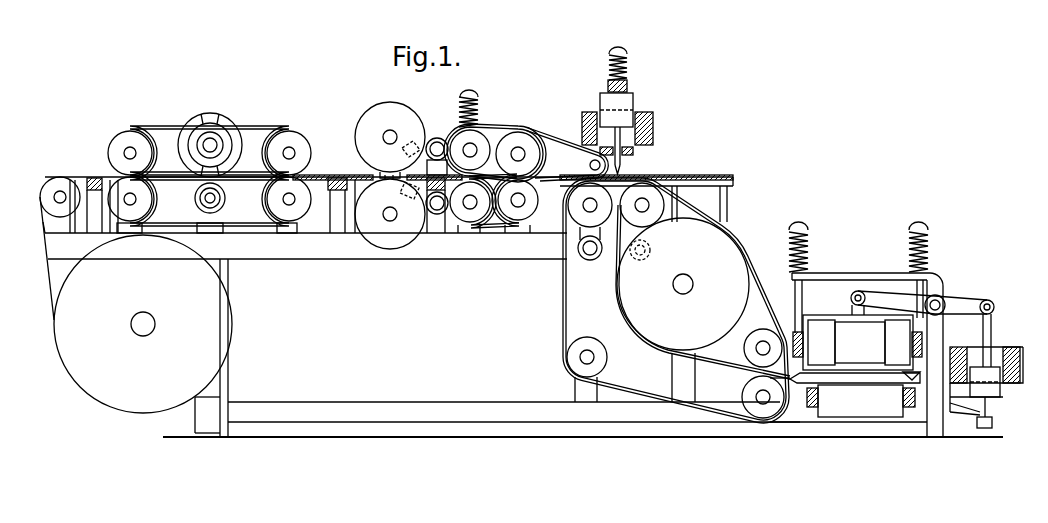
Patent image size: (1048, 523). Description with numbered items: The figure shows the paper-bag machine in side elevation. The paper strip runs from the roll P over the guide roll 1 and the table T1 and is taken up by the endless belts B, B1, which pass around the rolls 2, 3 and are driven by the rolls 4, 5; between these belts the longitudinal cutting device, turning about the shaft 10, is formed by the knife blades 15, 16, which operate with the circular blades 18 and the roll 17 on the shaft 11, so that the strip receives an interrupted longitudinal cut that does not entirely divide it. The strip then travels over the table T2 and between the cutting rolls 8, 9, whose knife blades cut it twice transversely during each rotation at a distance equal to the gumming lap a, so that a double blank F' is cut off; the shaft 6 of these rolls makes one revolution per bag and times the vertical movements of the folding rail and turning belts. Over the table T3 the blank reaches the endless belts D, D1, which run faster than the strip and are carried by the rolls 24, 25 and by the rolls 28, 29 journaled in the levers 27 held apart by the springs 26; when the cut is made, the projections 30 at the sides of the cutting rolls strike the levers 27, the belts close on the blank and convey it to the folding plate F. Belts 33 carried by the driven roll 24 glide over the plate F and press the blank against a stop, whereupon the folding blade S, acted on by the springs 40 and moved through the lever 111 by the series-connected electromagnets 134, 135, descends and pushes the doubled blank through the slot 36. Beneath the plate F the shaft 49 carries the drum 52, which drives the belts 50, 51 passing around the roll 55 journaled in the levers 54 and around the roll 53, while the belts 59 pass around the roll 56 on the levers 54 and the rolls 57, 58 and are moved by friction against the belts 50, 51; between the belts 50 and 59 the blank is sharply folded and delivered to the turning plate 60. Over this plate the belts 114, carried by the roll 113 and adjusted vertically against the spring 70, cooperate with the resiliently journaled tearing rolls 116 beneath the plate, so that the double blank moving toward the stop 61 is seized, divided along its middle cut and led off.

The guide roll 1 is at (52, 180).
The roll P is at (100, 400).
The table T1 is at (92, 178).
The upper belt roller 2 is at (143, 143).
The lower belt roller 3 is at (138, 204).
The roll 4 is at (306, 150).
The roll 5 is at (300, 209).
The endless belt B is at (264, 129).
The endless belt B1 is at (209, 199).
The knife blade 16 is at (210, 118).
The side blade 15 is at (188, 158).
The drum shaft 10 is at (222, 150).
The roll 17 is at (221, 195).
The circular blade 18 is at (199, 193).
The shaft 11 is at (198, 202).
The table T2 is at (333, 172).
The table T3 is at (434, 173).
The cutting roll 8 is at (390, 110).
The shaft 6 is at (386, 216).
The projection 30 is at (402, 150).
The cutting roll 9 is at (408, 240).
The lever 27 is at (437, 137).
The roll 28 is at (478, 136).
The spring 26 is at (472, 100).
The endless belt D is at (505, 126).
The roll 24 is at (524, 136).
The belt 33 is at (554, 140).
The double blank F' is at (560, 161).
The roll 29 is at (473, 200).
The roll 25 is at (512, 204).
The endless belt D1 is at (495, 230).
The spring 40 is at (624, 66).
The electromagnet 134 is at (605, 106).
The electromagnet 135 is at (652, 126).
The folding blade S is at (625, 168).
The slot 36 is at (626, 173).
The folding plate F is at (646, 164).
The roll 55 is at (655, 193).
The roll 56 is at (574, 201).
The lever 54 is at (580, 230).
The belt 50 is at (702, 215).
The belt 51 is at (760, 277).
The shaft 49 is at (688, 293).
The drum 52 is at (636, 342).
The belt 59 is at (588, 323).
The roll 53 is at (750, 352).
The roll 57 is at (600, 361).
The roll 58 is at (745, 393).
The spring 70 is at (806, 250).
The gumming lap a is at (874, 241).
The lever 111 is at (826, 315).
The belt 114 is at (859, 342).
The roll 113 is at (860, 342).
The tearing roll 116 is at (861, 401).
The turning plate 60 is at (892, 384).
The stop 61 is at (918, 374).